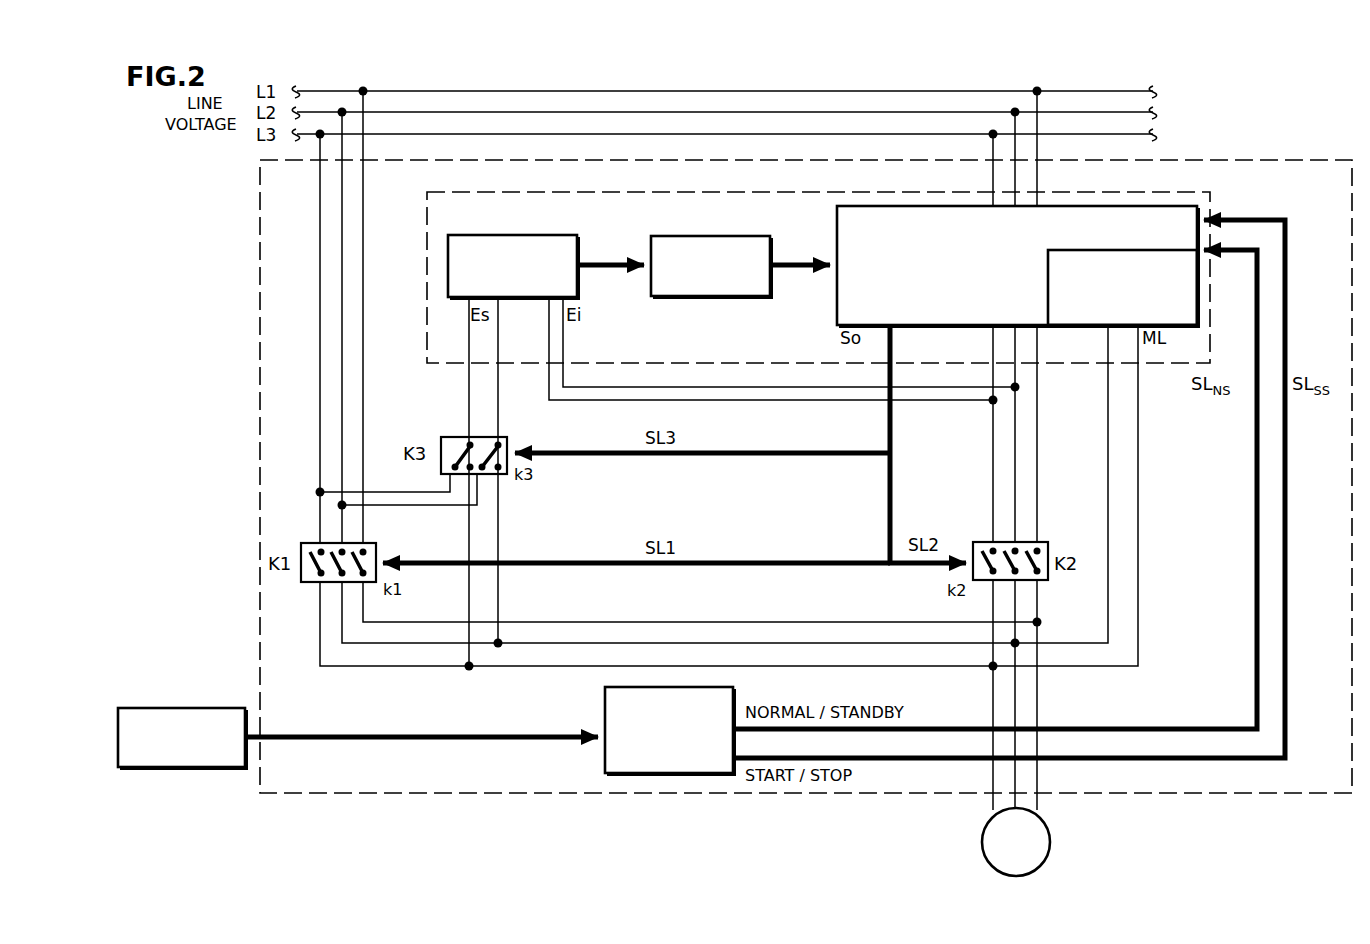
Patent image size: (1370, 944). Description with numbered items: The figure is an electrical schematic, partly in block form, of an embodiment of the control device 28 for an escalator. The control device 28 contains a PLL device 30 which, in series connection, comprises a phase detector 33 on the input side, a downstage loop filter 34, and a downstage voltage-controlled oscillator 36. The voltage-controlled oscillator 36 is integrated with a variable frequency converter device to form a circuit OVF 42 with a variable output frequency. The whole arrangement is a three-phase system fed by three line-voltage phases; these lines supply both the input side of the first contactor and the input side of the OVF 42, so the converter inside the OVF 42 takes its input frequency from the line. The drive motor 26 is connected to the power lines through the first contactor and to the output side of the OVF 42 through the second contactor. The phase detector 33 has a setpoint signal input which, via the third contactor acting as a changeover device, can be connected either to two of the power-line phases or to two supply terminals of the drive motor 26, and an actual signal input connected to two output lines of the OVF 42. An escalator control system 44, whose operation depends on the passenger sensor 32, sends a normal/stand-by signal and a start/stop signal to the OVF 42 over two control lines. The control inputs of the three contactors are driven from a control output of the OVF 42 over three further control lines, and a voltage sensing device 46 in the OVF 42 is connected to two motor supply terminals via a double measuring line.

The drive motor 26 is at (1049, 826).
The control device 28 is at (1262, 150).
The PLL device 30 is at (600, 190).
The passenger sensor 32 is at (197, 708).
The phase detector 33 is at (504, 235).
The loop filter 34 is at (728, 236).
The voltage-controlled oscillator 36 is at (858, 246).
The OVF circuit 42 is at (946, 204).
The escalator control system 44 is at (610, 687).
The voltage sensing device 46 is at (1112, 250).